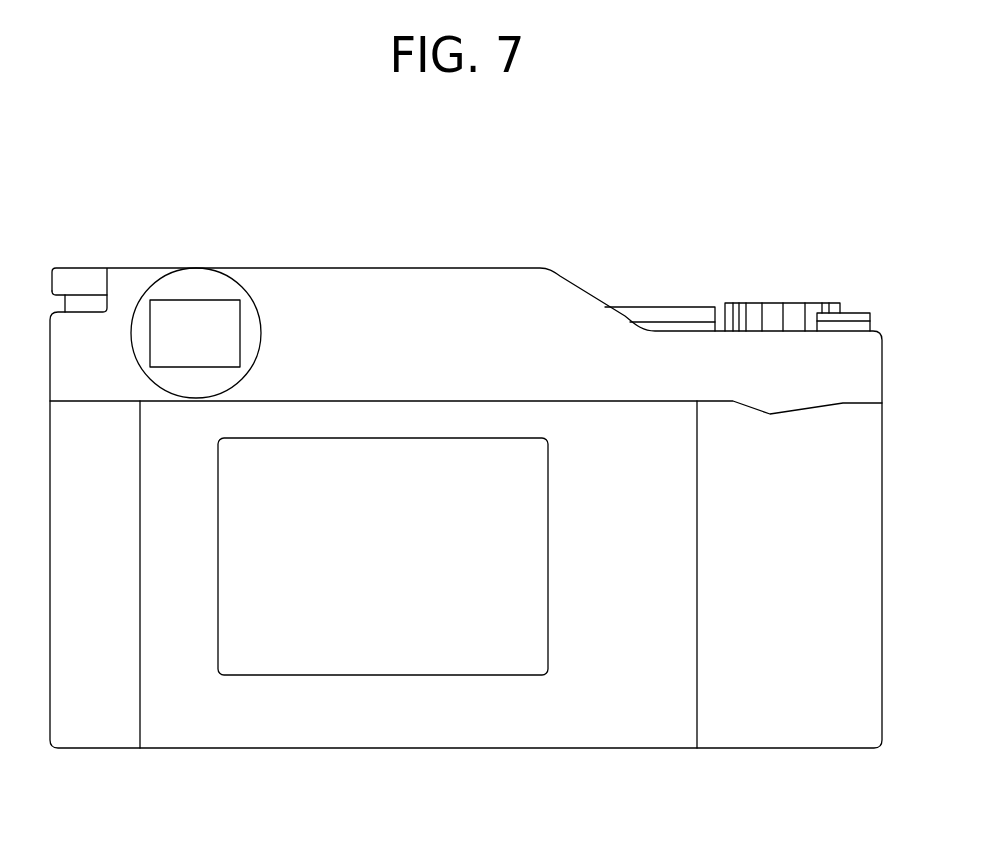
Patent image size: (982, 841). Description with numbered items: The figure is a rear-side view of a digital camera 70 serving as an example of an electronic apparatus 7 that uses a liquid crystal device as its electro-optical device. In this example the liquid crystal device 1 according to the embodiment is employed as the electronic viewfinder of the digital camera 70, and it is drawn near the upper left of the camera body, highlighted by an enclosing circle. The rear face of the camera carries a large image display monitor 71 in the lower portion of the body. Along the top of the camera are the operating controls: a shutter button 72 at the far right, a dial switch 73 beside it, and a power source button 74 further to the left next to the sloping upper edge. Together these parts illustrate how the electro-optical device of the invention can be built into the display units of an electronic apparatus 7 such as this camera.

The electronic apparatus 7 is at (126, 246).
The liquid crystal device 1 is at (200, 312).
The digital camera 70 is at (428, 310).
The image display monitor 71 is at (369, 637).
The shutter button 72 is at (857, 318).
The dial switch 73 is at (772, 313).
The power source button 74 is at (663, 317).